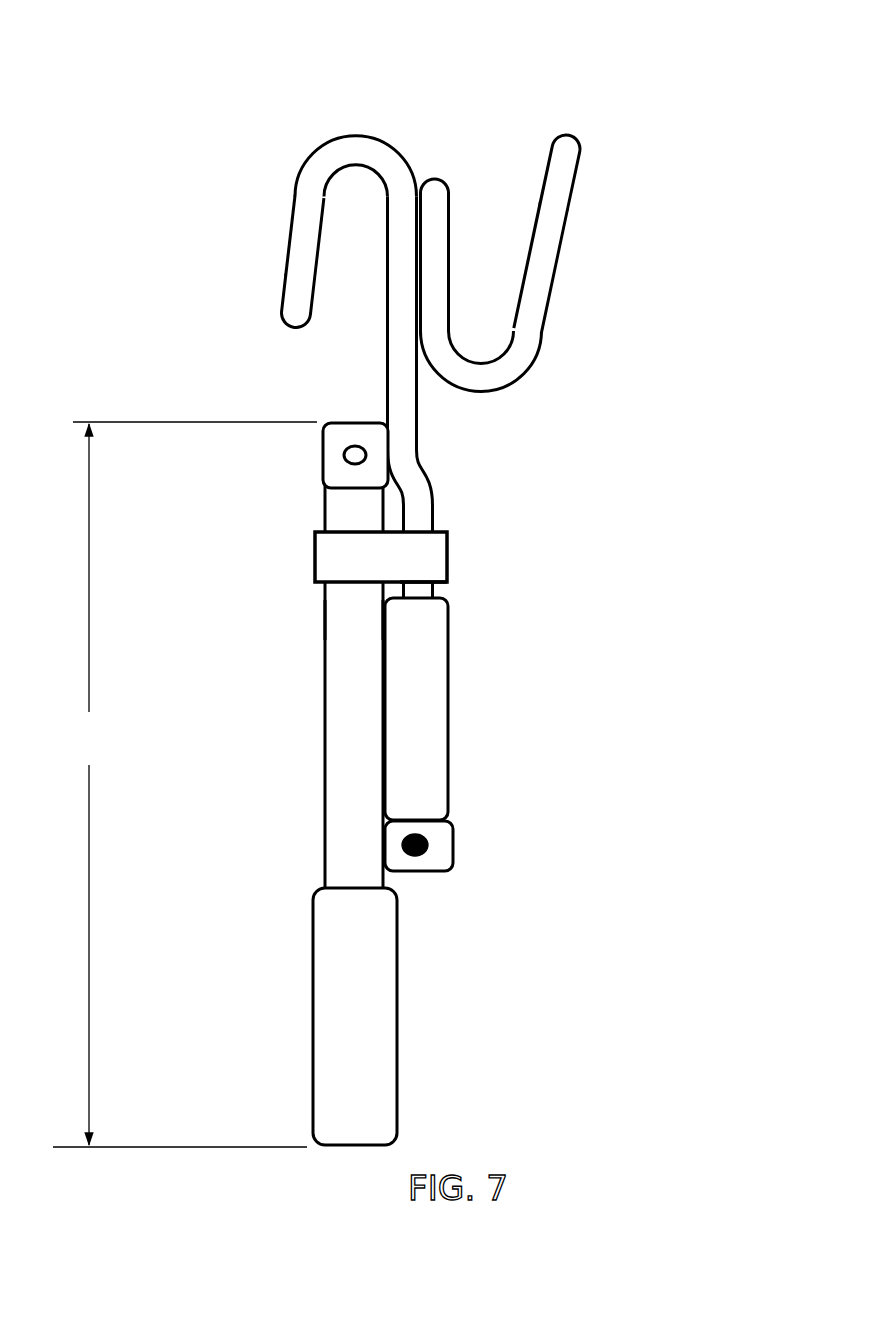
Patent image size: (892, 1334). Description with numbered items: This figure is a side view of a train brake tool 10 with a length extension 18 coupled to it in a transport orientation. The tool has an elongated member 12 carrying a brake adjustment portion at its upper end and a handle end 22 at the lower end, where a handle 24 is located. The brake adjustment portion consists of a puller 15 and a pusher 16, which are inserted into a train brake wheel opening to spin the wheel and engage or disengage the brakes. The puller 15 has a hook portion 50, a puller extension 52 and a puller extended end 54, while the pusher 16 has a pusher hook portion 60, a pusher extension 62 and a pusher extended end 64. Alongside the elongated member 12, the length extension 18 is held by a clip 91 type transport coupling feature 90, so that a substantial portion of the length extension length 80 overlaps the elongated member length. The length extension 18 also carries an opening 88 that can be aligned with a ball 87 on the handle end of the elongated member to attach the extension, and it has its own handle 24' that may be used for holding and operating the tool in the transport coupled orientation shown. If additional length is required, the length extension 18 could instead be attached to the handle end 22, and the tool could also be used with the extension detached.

The train brake tool 10 is at (258, 120).
The elongated member 12 is at (405, 460).
The puller 15 is at (273, 242).
The pusher 16 is at (563, 228).
The length extension 18 is at (343, 740).
The handle end 22 is at (430, 873).
The handle 24 is at (490, 709).
The handle 24' is at (290, 1016).
The hook portion 50 is at (353, 158).
The puller extension 52 is at (288, 250).
The puller extended end 54 is at (287, 332).
The pusher hook portion 60 is at (493, 374).
The pusher extension 62 is at (545, 238).
The pusher extended end 64 is at (563, 148).
The length extension length 80 is at (185, 784).
The ball 87 is at (337, 613).
The opening 88 is at (343, 455).
The transport coupling feature 90 is at (332, 553).
The clip 91 is at (418, 552).